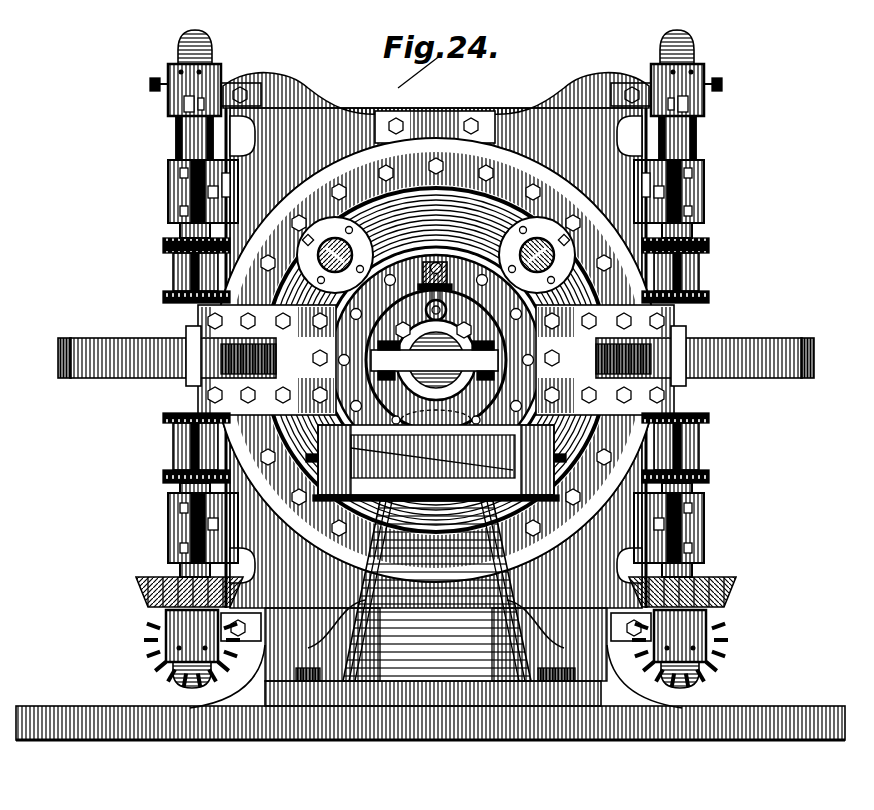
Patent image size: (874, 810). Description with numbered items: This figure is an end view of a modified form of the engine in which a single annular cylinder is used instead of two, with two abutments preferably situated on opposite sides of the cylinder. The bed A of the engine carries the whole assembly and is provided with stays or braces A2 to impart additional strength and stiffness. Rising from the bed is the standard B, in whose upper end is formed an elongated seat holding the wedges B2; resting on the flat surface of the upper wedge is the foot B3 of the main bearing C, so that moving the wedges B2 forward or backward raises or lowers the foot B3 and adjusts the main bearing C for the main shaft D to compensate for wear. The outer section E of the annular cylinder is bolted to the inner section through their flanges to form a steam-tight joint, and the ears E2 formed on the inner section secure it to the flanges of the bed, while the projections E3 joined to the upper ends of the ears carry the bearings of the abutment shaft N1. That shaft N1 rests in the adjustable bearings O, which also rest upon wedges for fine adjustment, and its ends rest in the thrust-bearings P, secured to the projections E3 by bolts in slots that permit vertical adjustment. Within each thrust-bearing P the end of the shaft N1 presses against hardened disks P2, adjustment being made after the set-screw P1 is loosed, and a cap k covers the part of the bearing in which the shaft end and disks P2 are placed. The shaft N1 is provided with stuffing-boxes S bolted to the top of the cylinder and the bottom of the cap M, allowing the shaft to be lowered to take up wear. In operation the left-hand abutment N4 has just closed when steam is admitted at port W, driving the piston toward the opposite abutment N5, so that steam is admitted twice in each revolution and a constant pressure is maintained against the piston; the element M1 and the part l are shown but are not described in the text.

The bed A is at (100, 694).
The stays or braces A2 is at (257, 683).
The standard B is at (437, 591).
The wedges B2 is at (436, 463).
The foot B3 is at (433, 456).
The main bearing C is at (452, 306).
The main shaft D is at (436, 360).
The outer section of annular cylinder E is at (436, 360).
The ears E2 is at (433, 104).
The projections E3 is at (436, 395).
The port W is at (436, 255).
The cap M is at (124, 331).
The bearing plate M1 is at (436, 360).
The left-hand abutment N4 is at (50, 345).
The abutment N5 is at (806, 352).
The shaft N1 is at (168, 132).
The adjustable bearings O is at (432, 361).
The stuffing-boxes S is at (434, 400).
The thrust-bearings P is at (160, 66).
The set-screw P1 is at (142, 76).
The hardened disks P2 is at (443, 47).
The cap k is at (168, 96).
The bevel gear l is at (429, 589).